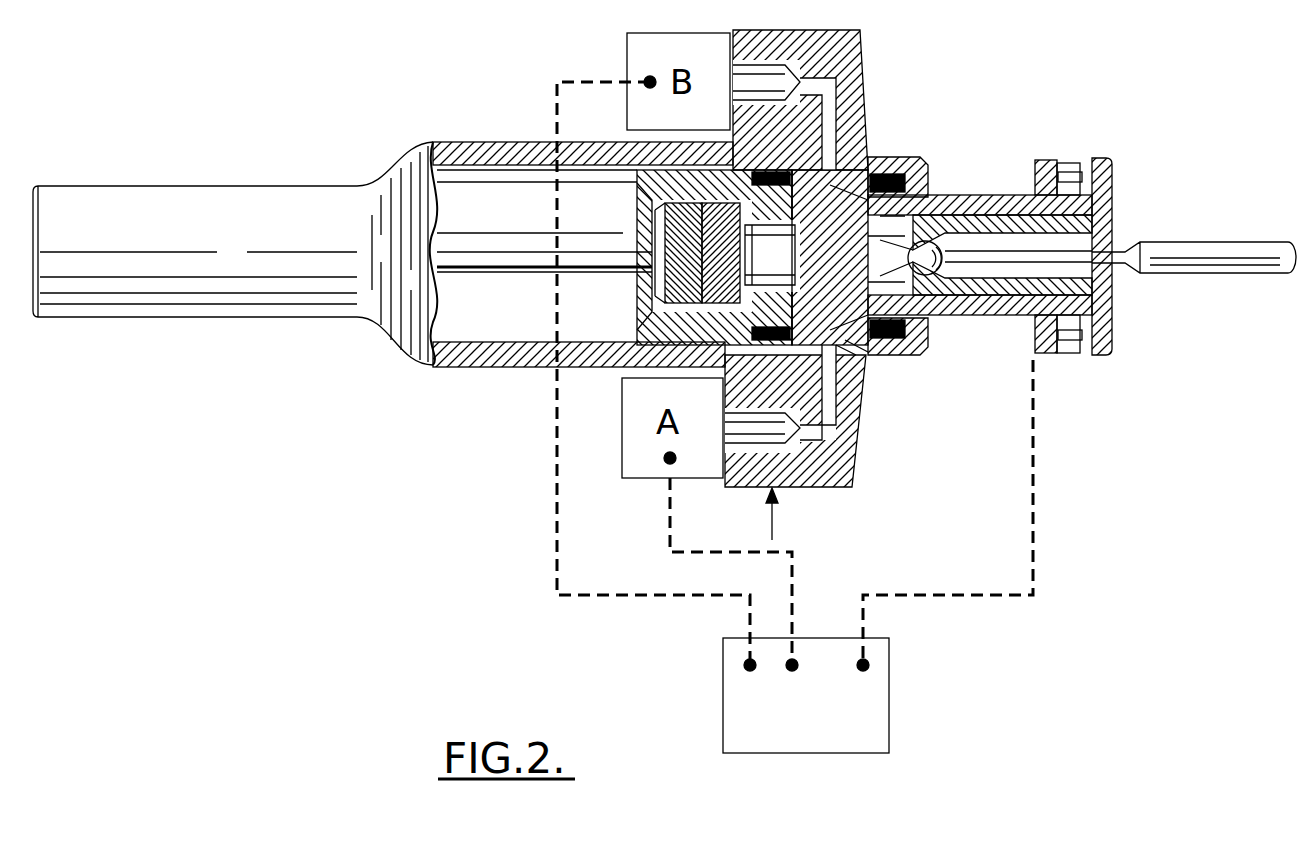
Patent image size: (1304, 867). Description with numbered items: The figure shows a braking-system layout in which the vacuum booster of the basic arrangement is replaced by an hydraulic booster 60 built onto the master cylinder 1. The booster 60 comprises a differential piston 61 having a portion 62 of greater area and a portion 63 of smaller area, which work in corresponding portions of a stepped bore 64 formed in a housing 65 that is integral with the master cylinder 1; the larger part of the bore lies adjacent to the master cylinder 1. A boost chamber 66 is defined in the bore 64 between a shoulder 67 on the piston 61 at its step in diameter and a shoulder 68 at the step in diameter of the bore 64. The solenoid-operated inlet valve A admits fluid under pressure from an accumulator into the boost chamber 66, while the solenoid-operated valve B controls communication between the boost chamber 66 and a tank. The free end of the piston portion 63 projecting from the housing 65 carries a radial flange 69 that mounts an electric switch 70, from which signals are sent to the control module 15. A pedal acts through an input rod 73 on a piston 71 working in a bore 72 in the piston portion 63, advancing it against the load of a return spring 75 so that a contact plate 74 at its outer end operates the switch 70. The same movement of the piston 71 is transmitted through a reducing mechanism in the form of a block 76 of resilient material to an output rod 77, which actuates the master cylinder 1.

The master cylinder 1 is at (228, 256).
The control module 15 is at (828, 721).
The hydraulic booster 60 is at (866, 101).
The differential piston 61 is at (935, 195).
The piston portion of greater area 62 is at (648, 206).
The piston portion of smaller area 63 is at (985, 195).
The stepped bore 64 is at (526, 141).
The housing 65 is at (490, 350).
The boost chamber 66 is at (860, 356).
The shoulder on the piston 67 is at (836, 183).
The shoulder in the bore 68 is at (866, 341).
The radial flange 69 is at (1064, 354).
The electric switch 70 is at (1073, 342).
The piston 71 is at (958, 314).
The bore 72 is at (1027, 316).
The input rod 73 is at (1215, 252).
The contact plate 74 is at (1112, 183).
The return spring 75 is at (925, 316).
The block of resilient material 76 is at (670, 282).
The output rod 77 is at (493, 252).